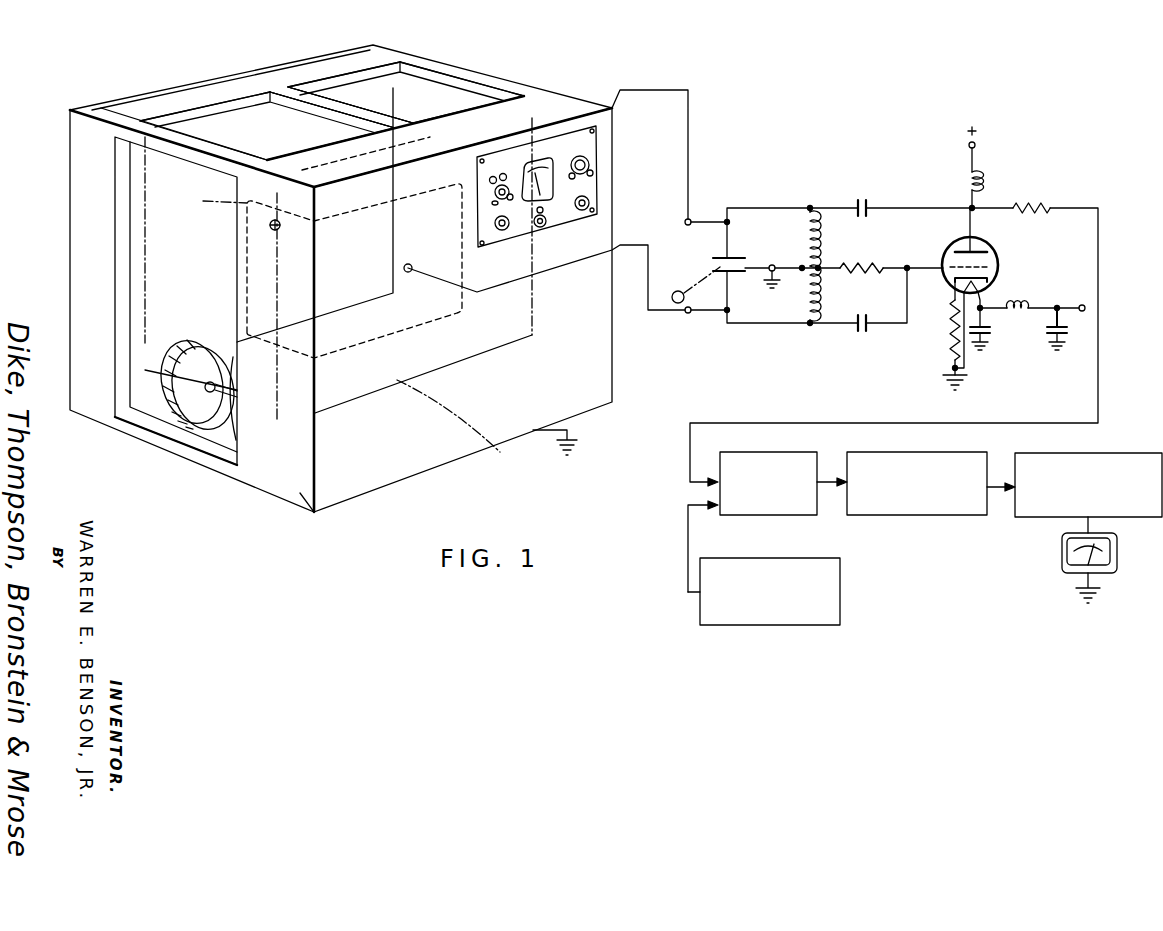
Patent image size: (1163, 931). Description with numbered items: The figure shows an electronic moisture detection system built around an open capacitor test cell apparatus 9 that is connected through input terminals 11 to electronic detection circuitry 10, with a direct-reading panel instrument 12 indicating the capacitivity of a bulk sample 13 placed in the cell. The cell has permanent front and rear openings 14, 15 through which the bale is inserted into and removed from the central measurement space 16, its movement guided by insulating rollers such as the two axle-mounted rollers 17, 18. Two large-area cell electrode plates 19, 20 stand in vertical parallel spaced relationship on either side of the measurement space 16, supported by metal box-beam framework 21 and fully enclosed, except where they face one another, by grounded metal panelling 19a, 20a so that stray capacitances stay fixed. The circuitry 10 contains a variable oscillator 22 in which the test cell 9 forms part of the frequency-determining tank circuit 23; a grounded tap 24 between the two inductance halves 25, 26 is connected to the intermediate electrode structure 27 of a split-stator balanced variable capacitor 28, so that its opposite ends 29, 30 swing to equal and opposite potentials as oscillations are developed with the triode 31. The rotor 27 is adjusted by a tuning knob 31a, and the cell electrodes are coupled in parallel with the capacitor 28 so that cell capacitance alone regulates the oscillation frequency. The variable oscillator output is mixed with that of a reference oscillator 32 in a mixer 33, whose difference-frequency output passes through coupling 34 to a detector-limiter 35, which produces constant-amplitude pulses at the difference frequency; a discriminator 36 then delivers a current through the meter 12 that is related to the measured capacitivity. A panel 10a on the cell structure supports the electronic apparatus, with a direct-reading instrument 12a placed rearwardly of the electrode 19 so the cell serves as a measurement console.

The capacitor test cell apparatus 9 is at (593, 66).
The electronic detection circuitry 10 is at (897, 582).
The panel 10a is at (578, 146).
The input terminals 11 is at (686, 221).
The direct-reading panel instrument 12 is at (1062, 556).
The direct-reading instrument 12a is at (548, 194).
The bulk sample 13 is at (470, 128).
The front opening 14 is at (168, 260).
The rear opening 15 is at (433, 103).
The central measurement space 16 is at (268, 135).
The roller 17 is at (188, 407).
The roller 18 is at (232, 363).
The cell electrode plate 19 is at (459, 423).
The grounded metal panelling 19a is at (347, 480).
The cell electrode plate 20 is at (145, 207).
The grounded metal panelling 20a is at (73, 173).
The metal box-beam framework 21 is at (320, 87).
The variable oscillator 22 is at (982, 160).
The tank circuit 23 is at (884, 322).
The grounded tap 24 is at (802, 271).
The inductance half 25 is at (820, 241).
The inductance half 26 is at (821, 297).
The intermediate electrode structure 27 is at (744, 263).
The split-stator balanced variable capacitor 28 is at (736, 257).
The capacitor end 29 is at (727, 219).
The capacitor end 30 is at (727, 313).
The triode 31 is at (1000, 266).
The tuning knob 31a is at (586, 161).
The reference oscillator 32 is at (762, 626).
The mixer 33 is at (742, 517).
The coupling 34 is at (827, 490).
The detector-limiter 35 is at (898, 518).
The discriminator 36 is at (1115, 453).